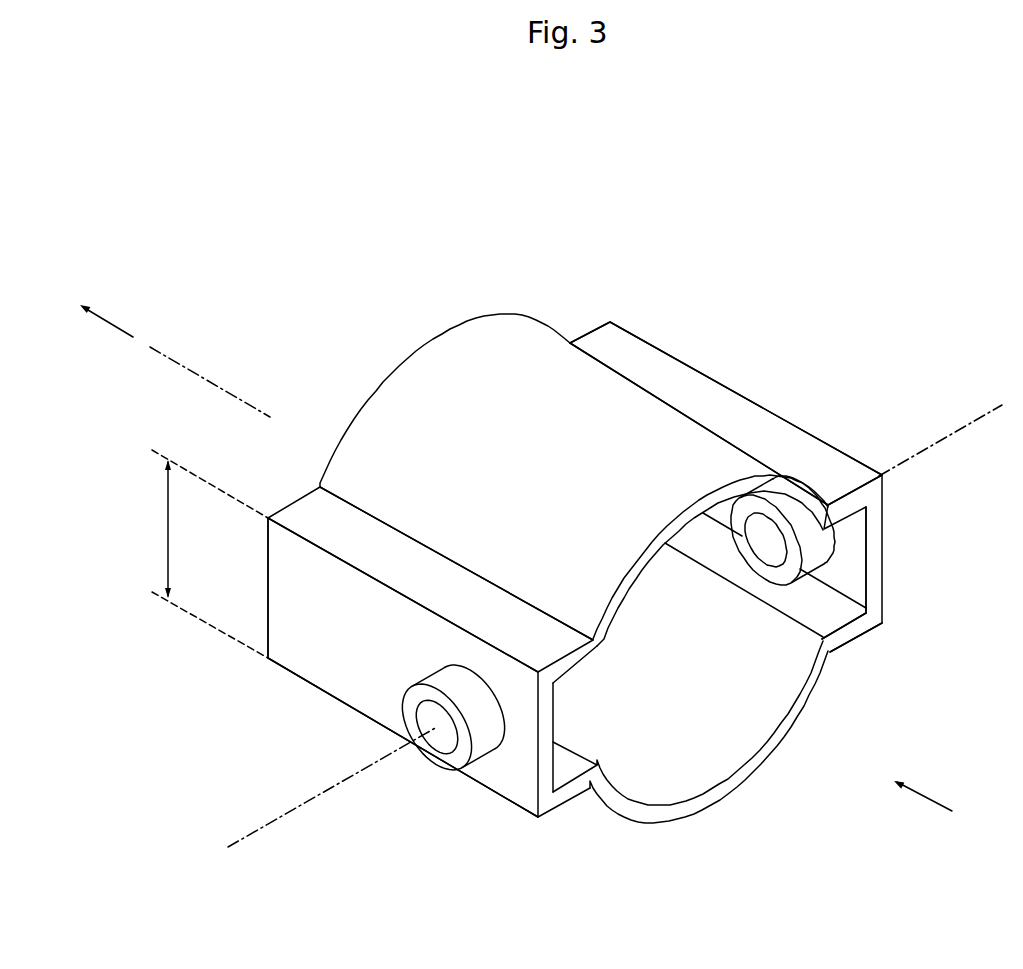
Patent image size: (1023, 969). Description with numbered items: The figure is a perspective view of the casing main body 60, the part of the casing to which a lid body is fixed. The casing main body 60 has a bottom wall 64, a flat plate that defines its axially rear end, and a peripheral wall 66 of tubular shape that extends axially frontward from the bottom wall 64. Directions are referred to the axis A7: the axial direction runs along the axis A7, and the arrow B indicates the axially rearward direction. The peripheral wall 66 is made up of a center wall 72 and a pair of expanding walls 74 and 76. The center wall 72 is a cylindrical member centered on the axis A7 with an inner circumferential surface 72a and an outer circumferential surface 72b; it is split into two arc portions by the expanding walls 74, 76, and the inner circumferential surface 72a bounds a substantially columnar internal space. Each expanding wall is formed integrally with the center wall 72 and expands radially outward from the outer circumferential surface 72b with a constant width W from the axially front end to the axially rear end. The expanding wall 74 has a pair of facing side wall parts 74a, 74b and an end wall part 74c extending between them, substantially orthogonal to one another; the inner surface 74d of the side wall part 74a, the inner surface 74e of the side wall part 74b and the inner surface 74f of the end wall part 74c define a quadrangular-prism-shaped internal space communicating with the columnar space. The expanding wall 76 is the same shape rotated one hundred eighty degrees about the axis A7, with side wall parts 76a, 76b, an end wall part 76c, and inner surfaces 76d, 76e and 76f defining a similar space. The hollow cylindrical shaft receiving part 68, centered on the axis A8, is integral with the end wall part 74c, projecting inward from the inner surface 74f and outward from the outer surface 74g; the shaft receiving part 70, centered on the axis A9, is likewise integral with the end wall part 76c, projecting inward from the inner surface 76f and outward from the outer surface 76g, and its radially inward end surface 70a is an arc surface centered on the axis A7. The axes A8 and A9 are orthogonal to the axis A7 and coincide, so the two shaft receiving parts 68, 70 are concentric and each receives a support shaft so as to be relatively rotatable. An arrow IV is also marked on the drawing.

The casing main body 60 is at (667, 178).
The bottom wall 64 is at (383, 380).
The peripheral wall 66 is at (672, 343).
The shaft receiving part 68 is at (473, 743).
The shaft receiving part 70 is at (867, 600).
The end surface 70a is at (759, 570).
The center wall 72 is at (490, 357).
The inner circumferential surface 72a is at (707, 740).
The outer circumferential surface 72b is at (604, 494).
The expanding wall 74 is at (305, 616).
The side wall part 74a is at (458, 598).
The side wall part 74b is at (566, 803).
The end wall part 74c is at (367, 670).
The inner surface 74d is at (573, 671).
The inner surface 74e is at (568, 764).
The inner surface 74f is at (556, 714).
The outer surface 74g is at (383, 643).
The expanding wall 76 is at (785, 417).
The side wall part 76a is at (742, 418).
The side wall part 76b is at (854, 630).
The end wall part 76c is at (873, 535).
The inner surface 76d is at (885, 511).
The inner surface 76e is at (813, 608).
The inner surface 76f is at (847, 546).
The outer surface 76g is at (882, 612).
The axis A7 is at (172, 357).
The center axis A8 is at (255, 833).
The center axis A9 is at (974, 418).
The arrow B is at (95, 311).
The view direction IV is at (936, 809).
The width W is at (200, 554).